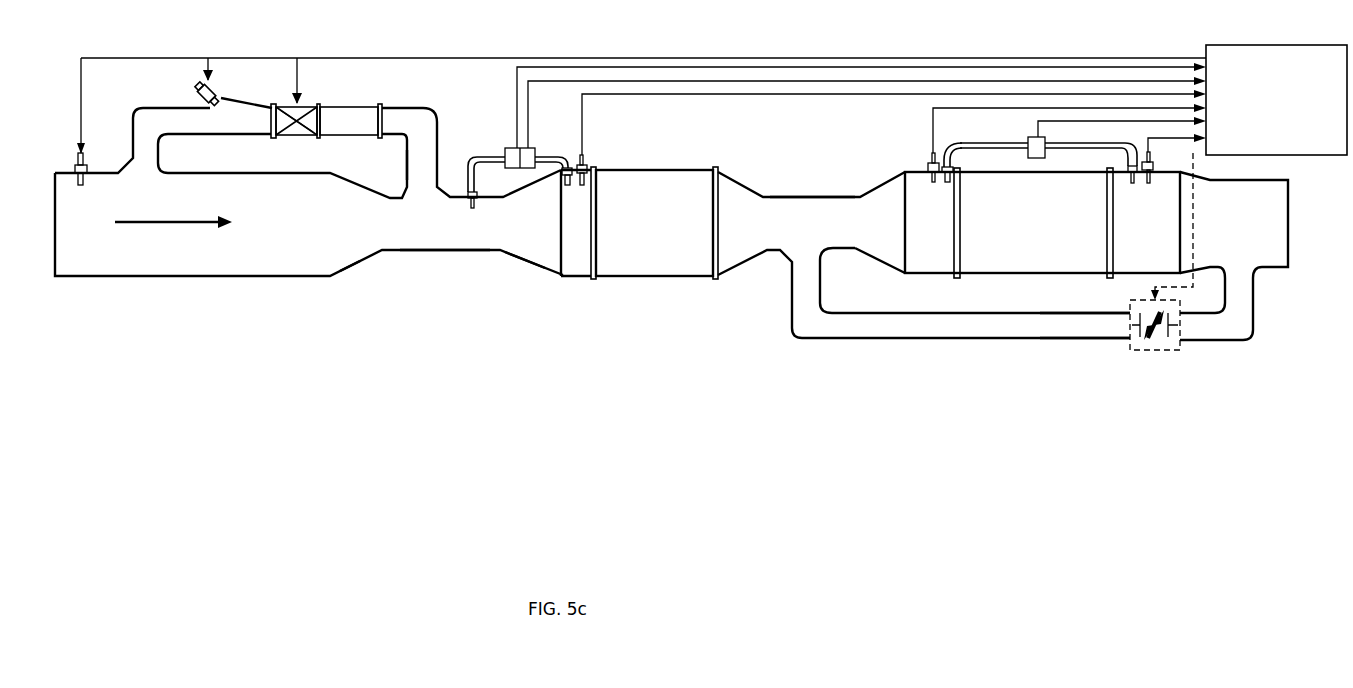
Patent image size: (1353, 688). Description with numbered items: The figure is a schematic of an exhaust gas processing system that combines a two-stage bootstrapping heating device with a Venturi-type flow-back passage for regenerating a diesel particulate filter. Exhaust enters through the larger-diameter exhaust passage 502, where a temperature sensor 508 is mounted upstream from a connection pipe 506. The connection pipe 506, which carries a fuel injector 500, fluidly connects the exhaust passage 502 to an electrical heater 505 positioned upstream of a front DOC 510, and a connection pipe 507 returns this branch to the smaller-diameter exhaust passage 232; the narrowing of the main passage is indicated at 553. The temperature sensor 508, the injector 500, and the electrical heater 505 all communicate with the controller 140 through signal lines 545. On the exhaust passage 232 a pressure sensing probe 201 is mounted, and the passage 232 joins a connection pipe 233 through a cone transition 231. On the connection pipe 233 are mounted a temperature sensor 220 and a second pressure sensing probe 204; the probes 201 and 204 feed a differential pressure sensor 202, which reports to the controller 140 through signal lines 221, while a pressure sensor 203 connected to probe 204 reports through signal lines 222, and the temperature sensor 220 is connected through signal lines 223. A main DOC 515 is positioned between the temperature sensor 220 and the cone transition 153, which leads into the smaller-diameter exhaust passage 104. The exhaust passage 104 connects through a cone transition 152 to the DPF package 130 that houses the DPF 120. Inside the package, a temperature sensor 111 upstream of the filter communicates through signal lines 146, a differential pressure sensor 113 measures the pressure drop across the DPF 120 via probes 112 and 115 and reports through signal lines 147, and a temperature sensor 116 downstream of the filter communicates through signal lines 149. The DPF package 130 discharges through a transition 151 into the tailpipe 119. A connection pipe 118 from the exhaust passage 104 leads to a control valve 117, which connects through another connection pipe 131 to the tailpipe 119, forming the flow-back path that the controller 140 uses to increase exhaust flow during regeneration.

The exhaust passage 502 is at (108, 276).
The pipe transition 553 is at (352, 268).
The exhaust passage 232 is at (485, 253).
The cone transition 231 is at (525, 260).
The connection pipe 506 is at (160, 148).
The connection pipe 507 is at (407, 152).
The temperature sensor 508 is at (85, 156).
The signal lines 545 is at (412, 59).
The fuel injector 500 is at (198, 98).
The front DOC 510 is at (363, 104).
The electrical heater 505 is at (297, 137).
The pressure sensing probe 201 is at (492, 156).
The differential pressure sensor 202 is at (508, 176).
The pressure sensor 203 is at (535, 147).
The pressure sensing probe 204 is at (550, 172).
The temperature sensor 220 is at (583, 155).
The signal lines 221 is at (515, 87).
The signal lines 222 is at (573, 81).
The signal lines 223 is at (582, 100).
The main DOC 515 is at (563, 276).
The connection pipe 233 is at (588, 253).
The cone transition 153 is at (738, 177).
The exhaust passage 104 is at (810, 197).
The cone transition 152 is at (896, 252).
The DPF package 130 is at (940, 276).
The DPF 120 is at (1113, 226).
The temperature sensor 111 is at (928, 158).
The signal lines 146 is at (934, 128).
The probe 112 is at (960, 147).
The differential pressure sensor 113 is at (1030, 158).
The signal lines 147 is at (1037, 128).
The probe 115 is at (1093, 148).
The temperature sensor 116 is at (1151, 154).
The signal lines 149 is at (1149, 141).
The controller 140 is at (1243, 45).
The transition 151 is at (1195, 213).
The tailpipe 119 is at (1287, 230).
The connection pipe 131 is at (1253, 300).
The connection pipe 118 is at (1050, 313).
The control valve 117 is at (1130, 307).